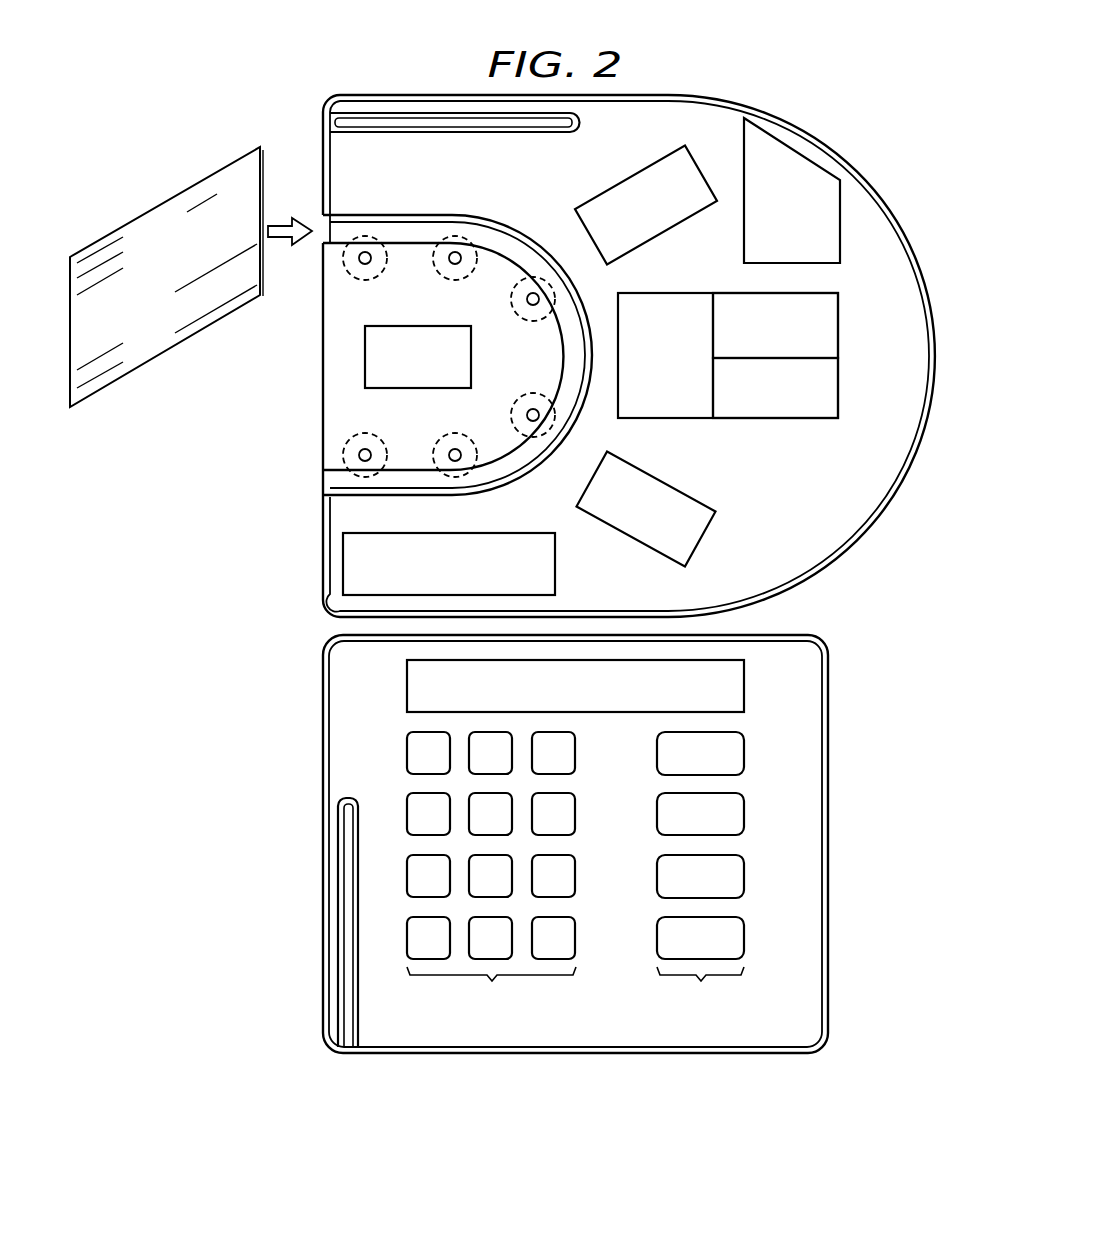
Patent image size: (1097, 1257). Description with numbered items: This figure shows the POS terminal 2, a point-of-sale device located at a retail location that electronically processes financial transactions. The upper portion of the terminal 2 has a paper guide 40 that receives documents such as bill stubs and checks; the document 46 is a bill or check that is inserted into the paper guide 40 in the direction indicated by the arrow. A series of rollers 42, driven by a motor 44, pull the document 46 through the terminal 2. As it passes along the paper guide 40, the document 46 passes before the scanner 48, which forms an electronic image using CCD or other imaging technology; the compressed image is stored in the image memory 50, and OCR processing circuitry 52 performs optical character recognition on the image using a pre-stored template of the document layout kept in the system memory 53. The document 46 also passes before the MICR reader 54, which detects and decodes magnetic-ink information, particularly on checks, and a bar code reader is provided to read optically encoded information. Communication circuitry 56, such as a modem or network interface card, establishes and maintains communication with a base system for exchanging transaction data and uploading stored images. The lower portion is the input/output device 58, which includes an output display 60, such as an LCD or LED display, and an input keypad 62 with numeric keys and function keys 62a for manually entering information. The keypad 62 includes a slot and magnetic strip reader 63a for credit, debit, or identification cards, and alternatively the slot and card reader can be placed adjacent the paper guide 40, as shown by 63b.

The POS terminal 2 is at (793, 62).
The paper guide 40 is at (310, 214).
The rollers 42 is at (365, 237).
The motor 44 is at (417, 389).
The document 46 is at (167, 201).
The scanner 48 is at (660, 295).
The image memory 50 is at (838, 326).
The OCR processing circuitry 52 is at (838, 389).
The system memory 53 is at (743, 139).
The MICR reader 54 is at (628, 177).
The communication circuitry 56 is at (555, 566).
The input/output device 58 is at (323, 843).
The output display 60 is at (744, 688).
The input keypad 62 is at (491, 883).
The function keys 62a is at (700, 883).
The slot and magnetic strip reader 63a is at (348, 1054).
The slot and card reader 63b is at (325, 122).